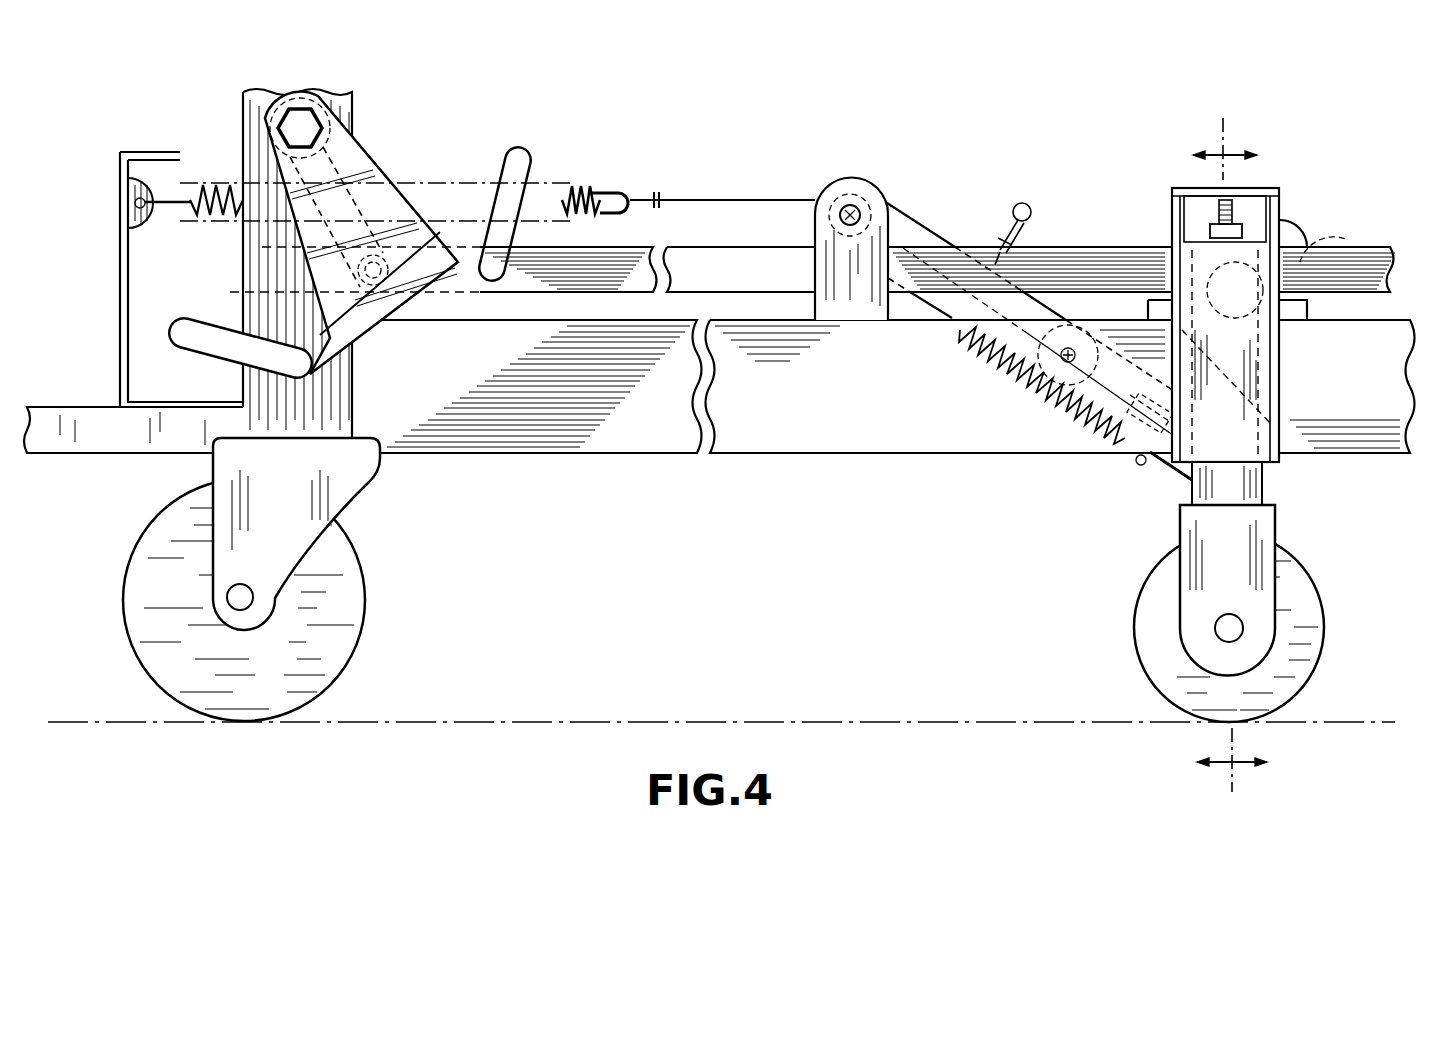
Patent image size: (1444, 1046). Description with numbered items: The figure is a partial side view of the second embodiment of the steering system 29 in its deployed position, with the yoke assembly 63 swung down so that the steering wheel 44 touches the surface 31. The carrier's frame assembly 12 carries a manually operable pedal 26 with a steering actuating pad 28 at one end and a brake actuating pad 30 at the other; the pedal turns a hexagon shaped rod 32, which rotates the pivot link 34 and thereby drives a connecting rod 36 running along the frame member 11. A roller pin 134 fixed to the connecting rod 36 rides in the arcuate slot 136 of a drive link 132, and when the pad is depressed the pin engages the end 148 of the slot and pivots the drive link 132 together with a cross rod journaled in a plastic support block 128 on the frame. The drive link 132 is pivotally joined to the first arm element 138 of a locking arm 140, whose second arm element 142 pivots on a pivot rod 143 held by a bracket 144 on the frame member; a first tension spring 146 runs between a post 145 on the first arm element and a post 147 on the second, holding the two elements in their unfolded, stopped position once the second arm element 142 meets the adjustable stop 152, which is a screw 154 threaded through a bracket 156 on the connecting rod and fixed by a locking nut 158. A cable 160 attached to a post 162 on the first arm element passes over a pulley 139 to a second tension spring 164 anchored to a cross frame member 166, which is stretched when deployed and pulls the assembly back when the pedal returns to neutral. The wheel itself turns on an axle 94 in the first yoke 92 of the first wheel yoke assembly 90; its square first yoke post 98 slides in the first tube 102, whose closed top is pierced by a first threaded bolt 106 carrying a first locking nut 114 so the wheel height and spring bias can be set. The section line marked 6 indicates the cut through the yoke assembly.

The frame member 11 is at (882, 452).
The frame assembly 12 is at (640, 637).
The pedal 26 is at (403, 340).
The steering actuating pad 28 is at (201, 326).
The steering system 29 is at (1046, 572).
The brake actuating pad 30 is at (504, 159).
The surface 31 is at (1354, 720).
The hexagon shaped rod 32 is at (308, 124).
The pivot link 34 is at (395, 175).
The connecting rod 36 is at (1098, 248).
The steering wheel 44 is at (1280, 702).
The yoke assembly 63 is at (1330, 523).
The first wheel yoke assembly 90 is at (1173, 539).
The first yoke 92 is at (1236, 578).
The axle 94 is at (1215, 628).
The first yoke post 98 is at (1264, 494).
The first tube 102 is at (1278, 390).
The first threaded bolt 106 is at (1232, 210).
The first locking nut 114 is at (1243, 226).
The first support block 128 is at (1295, 310).
The drive link 132 is at (1272, 410).
The roller pin 134 is at (1350, 220).
The arcuate slot 136 is at (1233, 287).
The first arm element 138 is at (1225, 355).
The pulley 139 is at (872, 175).
The locking arm 140 is at (1003, 425).
The second arm element 142 is at (925, 235).
The pivot rod 143 is at (840, 215).
The bracket 144 is at (842, 319).
The post 145 is at (1103, 455).
The first tension spring 146 is at (1050, 385).
The post 147 is at (1032, 344).
The end of arcuate slot 148 is at (1293, 242).
The adjustable stop 152 is at (1043, 190).
The screw 154 is at (1032, 216).
The bracket 156 is at (1042, 296).
The locking nut 158 is at (989, 229).
The cable 160 is at (720, 198).
The post 162 is at (1142, 464).
The second tension spring 164 is at (590, 186).
The cross frame member 166 is at (120, 234).
The section line 6- 6 is at (1233, 457).